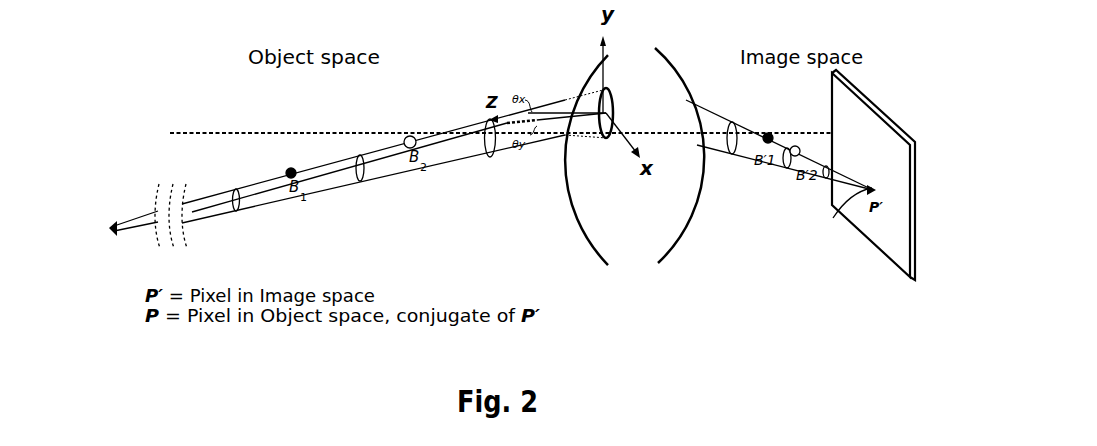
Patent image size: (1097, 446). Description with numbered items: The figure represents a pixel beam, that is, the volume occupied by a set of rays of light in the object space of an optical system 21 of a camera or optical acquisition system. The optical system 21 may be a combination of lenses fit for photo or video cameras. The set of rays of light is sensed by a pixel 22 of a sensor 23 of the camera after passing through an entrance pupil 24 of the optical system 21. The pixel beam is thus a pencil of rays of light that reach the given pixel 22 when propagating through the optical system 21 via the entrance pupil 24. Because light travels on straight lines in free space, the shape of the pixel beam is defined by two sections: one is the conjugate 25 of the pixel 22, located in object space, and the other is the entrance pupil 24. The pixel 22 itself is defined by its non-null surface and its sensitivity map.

The optical system 21 is at (592, 183).
The pixel 22 is at (847, 212).
The sensor 23 is at (893, 246).
The entrance pupil 24 is at (613, 113).
The conjugate of the pixel 25 is at (110, 229).